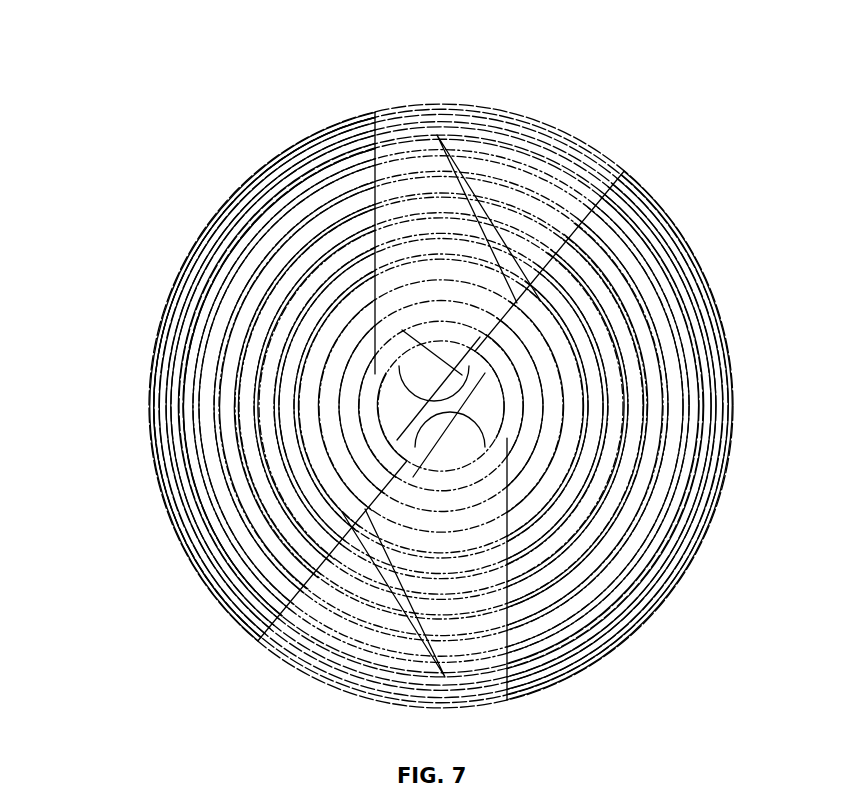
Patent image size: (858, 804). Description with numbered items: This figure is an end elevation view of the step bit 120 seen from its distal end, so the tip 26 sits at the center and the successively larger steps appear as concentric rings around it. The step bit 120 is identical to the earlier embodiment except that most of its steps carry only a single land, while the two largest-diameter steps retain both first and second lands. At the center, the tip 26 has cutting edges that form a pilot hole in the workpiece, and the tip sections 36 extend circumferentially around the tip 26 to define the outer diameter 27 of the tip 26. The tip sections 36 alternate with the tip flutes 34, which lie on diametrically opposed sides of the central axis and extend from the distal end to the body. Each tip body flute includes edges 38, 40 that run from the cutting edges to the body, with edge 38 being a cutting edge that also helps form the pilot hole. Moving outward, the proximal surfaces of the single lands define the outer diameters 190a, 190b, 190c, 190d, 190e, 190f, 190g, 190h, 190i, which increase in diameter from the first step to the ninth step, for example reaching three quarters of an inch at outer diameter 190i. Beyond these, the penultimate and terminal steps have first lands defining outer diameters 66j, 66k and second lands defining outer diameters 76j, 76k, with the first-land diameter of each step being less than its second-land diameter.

The step bit 120 is at (178, 168).
The outer diameter of the tip 27 is at (512, 389).
The edge 40 is at (400, 382).
The outer diameter of the land 190a is at (566, 397).
The outer diameter of the land 190b is at (591, 415).
The outer diameter of the land 190c is at (610, 431).
The outer diameter of the land 190d is at (632, 448).
The outer diameter of the land 190e is at (650, 465).
The outer diameter of the land 190f is at (667, 490).
The outer diameter of the land 190g is at (682, 507).
The outer diameter of the land 190h is at (689, 520).
The outer diameter of the land 190i is at (696, 535).
The outer diameter of the first land 66j is at (684, 557).
The outer diameter of the first land 66k is at (685, 576).
The outer diameter of the second land 76j is at (222, 535).
The outer diameter of the second land 76k is at (215, 585).
The tip flute 34 is at (400, 345).
The tip section 36 is at (450, 370).
The edge 38 is at (485, 373).
The tip 26 is at (448, 440).